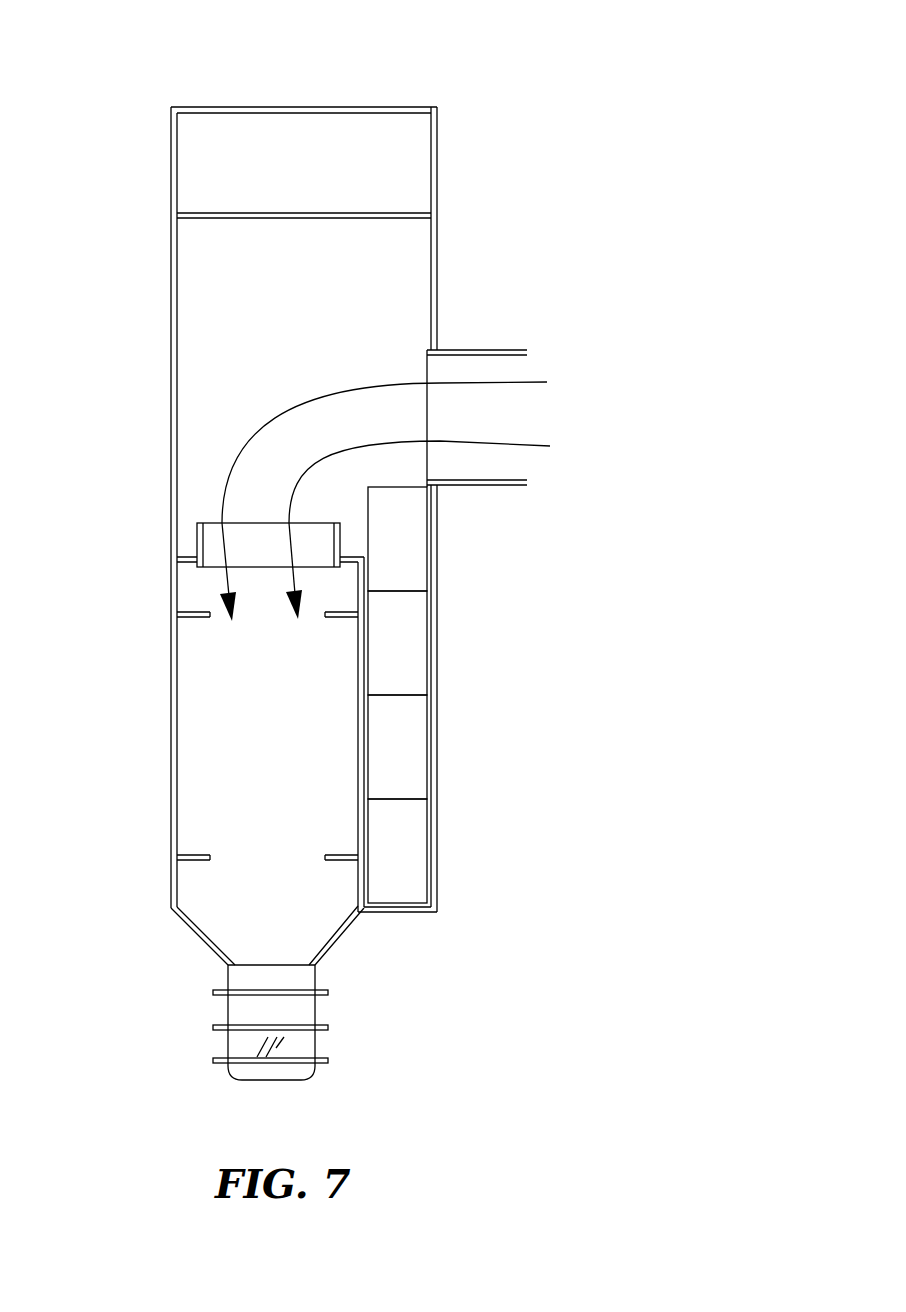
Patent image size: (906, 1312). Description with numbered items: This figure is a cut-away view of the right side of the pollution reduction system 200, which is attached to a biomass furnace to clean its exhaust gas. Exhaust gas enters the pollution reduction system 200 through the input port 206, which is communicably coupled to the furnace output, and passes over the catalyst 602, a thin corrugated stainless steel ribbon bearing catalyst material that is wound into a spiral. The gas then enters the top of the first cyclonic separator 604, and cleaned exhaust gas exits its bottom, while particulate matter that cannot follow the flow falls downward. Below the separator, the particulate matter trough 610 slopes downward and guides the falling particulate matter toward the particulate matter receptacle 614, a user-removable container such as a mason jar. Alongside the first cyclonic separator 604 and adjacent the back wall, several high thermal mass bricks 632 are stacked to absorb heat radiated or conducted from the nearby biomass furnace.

The pollution reduction system 200 is at (66, 103).
The input port 206 is at (483, 350).
The catalyst 602 is at (212, 539).
The first cyclonic separator 604 is at (281, 706).
The high thermal mass brick 632 is at (405, 537).
The particulate matter trough 610 is at (182, 918).
The particulate matter receptacle 614 is at (228, 1013).